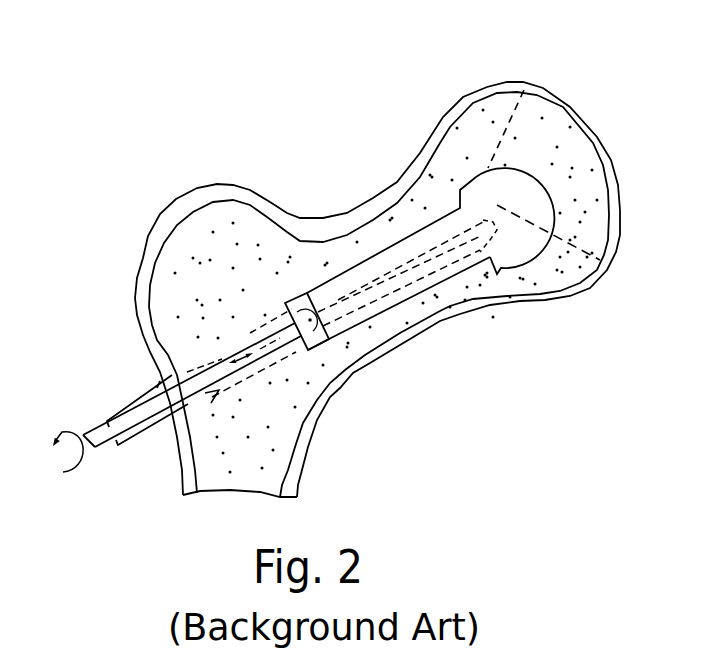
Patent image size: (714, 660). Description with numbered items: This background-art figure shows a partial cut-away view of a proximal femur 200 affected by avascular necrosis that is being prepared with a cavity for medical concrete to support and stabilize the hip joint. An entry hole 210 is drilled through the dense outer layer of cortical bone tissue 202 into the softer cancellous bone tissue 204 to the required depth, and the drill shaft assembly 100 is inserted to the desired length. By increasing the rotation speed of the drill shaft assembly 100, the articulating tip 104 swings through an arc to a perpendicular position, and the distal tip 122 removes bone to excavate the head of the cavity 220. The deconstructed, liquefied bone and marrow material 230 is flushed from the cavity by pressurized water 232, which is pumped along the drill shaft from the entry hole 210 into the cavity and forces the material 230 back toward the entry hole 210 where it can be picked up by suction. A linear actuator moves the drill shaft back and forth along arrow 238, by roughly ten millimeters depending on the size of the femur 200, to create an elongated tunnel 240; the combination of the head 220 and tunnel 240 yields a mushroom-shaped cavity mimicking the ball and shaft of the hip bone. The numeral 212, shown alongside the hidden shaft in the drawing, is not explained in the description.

The drill shaft assembly 100 is at (107, 456).
The articulating tip 104 is at (311, 292).
The distal tip 122 is at (287, 302).
The proximal femur 200 is at (385, 123).
The cortical bone tissue 202 is at (140, 279).
The cancellous bone tissue 204 is at (191, 231).
The entry hole 210 is at (163, 369).
The driver shaft hidden portion 212 is at (204, 400).
The head of the cavity 220 is at (531, 269).
The deconstructed bone and marrow material 230 is at (440, 278).
The pressurized water 232 is at (333, 286).
The arrow 238 is at (240, 366).
The elongated tunnel 240 is at (390, 320).